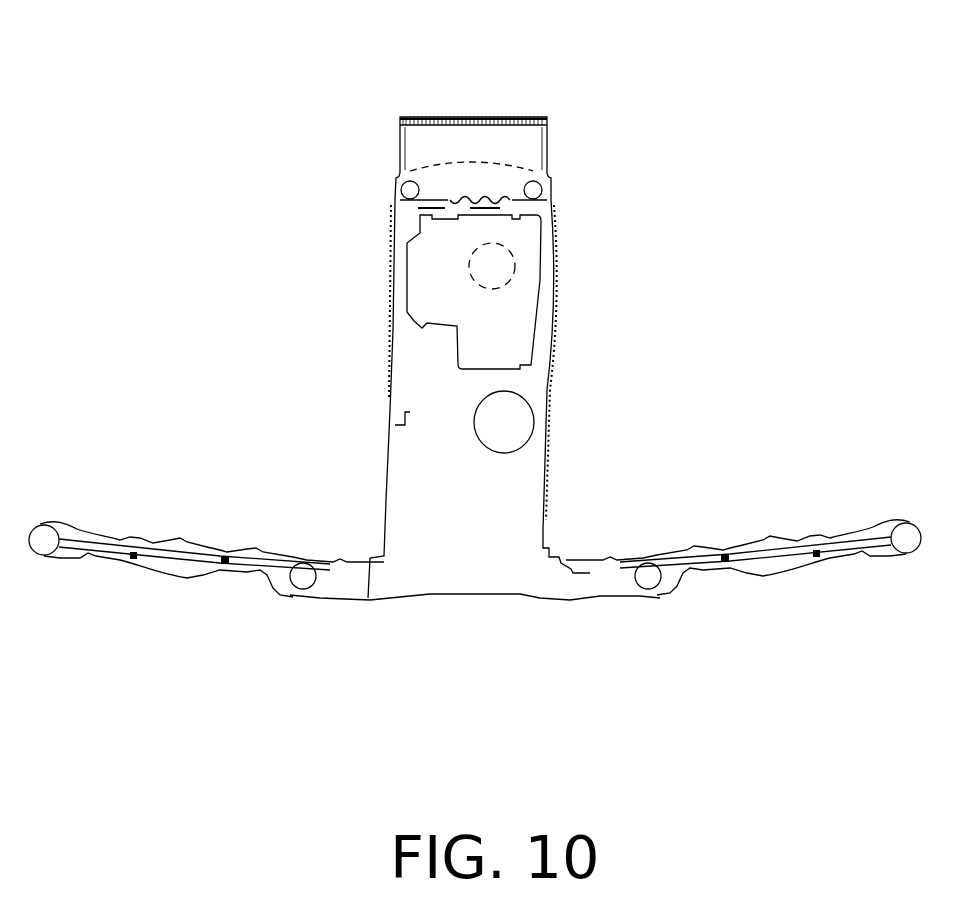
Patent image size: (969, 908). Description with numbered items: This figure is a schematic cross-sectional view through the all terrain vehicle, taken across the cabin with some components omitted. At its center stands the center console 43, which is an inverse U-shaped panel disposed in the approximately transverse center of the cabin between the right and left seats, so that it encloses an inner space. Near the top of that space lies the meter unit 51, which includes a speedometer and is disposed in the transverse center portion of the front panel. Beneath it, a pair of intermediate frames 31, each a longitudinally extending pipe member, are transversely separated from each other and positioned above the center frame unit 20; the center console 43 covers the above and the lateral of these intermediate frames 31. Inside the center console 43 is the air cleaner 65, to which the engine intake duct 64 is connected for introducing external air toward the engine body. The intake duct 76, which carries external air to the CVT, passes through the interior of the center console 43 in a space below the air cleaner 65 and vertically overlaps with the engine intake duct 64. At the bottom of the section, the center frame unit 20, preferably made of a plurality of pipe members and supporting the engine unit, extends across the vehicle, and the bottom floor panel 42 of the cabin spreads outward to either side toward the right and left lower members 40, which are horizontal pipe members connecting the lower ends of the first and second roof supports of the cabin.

The meter unit 51 is at (472, 116).
The intermediate frames 31 is at (401, 205).
The engine intake duct 64 is at (515, 243).
The air cleaner 65 is at (522, 310).
The center console 43 is at (392, 304).
The intake duct 76 is at (522, 425).
The lower members 40 is at (40, 524).
The floor panel 42 is at (187, 545).
The center frame unit 20 is at (297, 582).